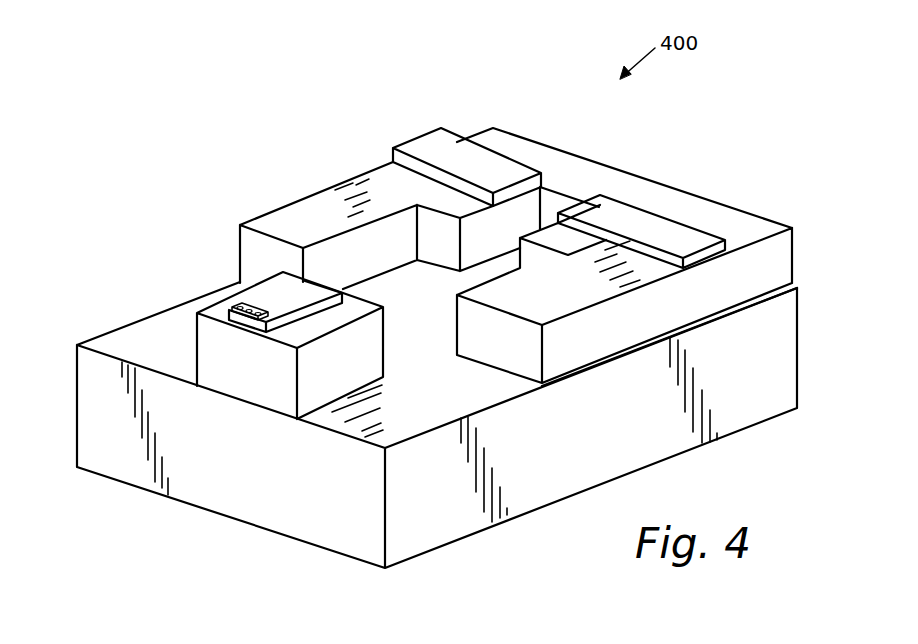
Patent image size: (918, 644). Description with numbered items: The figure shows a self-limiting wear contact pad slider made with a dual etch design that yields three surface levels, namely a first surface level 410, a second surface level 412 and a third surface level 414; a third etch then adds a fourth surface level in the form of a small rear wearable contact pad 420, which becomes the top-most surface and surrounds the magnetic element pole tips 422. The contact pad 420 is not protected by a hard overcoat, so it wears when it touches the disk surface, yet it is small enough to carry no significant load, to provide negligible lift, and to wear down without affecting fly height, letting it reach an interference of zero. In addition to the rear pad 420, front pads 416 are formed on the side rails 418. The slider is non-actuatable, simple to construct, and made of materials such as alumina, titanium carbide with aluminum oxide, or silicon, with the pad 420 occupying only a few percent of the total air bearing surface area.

The first surface level 410 is at (111, 340).
The second surface level 412 is at (213, 310).
The third surface level 414 is at (272, 291).
The front pads 416 is at (487, 161).
The side rails 418 is at (548, 283).
The wearable contact pad 420 is at (231, 307).
The magnetic element pole tips 422 is at (249, 310).